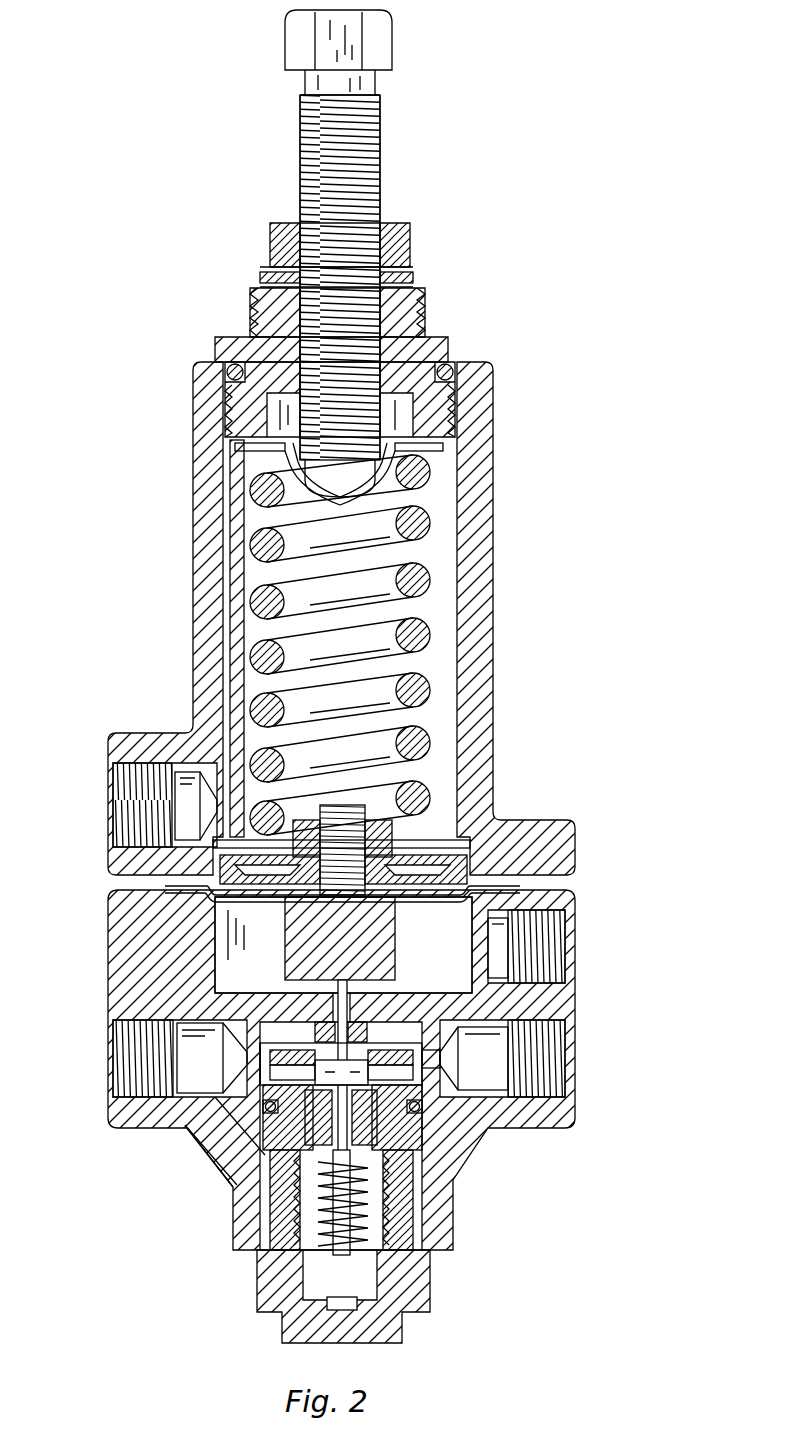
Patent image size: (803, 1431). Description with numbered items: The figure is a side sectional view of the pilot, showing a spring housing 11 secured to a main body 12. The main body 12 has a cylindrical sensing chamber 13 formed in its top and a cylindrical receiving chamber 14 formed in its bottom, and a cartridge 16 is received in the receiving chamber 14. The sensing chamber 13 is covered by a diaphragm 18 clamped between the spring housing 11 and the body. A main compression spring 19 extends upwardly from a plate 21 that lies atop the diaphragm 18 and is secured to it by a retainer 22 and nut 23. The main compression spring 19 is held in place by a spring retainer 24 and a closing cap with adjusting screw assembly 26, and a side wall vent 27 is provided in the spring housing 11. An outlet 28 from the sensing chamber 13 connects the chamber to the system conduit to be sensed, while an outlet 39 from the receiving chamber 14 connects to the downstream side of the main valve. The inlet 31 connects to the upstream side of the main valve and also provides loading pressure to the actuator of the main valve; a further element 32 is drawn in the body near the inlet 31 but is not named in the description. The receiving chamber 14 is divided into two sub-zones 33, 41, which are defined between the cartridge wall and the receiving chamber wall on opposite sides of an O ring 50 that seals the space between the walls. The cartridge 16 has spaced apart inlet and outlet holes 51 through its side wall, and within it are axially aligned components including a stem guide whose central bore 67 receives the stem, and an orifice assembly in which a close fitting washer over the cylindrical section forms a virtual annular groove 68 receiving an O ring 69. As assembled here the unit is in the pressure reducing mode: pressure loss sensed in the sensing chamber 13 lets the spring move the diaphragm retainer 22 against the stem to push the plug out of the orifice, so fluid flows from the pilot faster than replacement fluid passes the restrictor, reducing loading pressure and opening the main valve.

The spring housing 11 is at (492, 492).
The main body 12 is at (108, 945).
The sensing chamber 13 is at (448, 958).
The receiving chamber 14 is at (360, 1125).
The cartridge 16 is at (232, 1288).
The diaphragm 18 is at (533, 820).
The main compression spring 19 is at (430, 635).
The plate 21 is at (507, 820).
The retainer 22 is at (477, 903).
The nut 23 is at (300, 845).
The spring retainer 24 is at (238, 452).
The closing cap with adjusting screw assembly 26 is at (207, 331).
The side wall vent 27 is at (110, 790).
The outlet 28 is at (555, 935).
The inlet 31 is at (108, 1050).
The passage 32 is at (187, 1138).
The sub-zone 33 is at (240, 1200).
The outlet 39 is at (555, 1065).
The sub-zone 41 is at (270, 1050).
The O ring 50 is at (420, 1130).
The inlet and outlet holes 51 is at (425, 1105).
The central bore 67 is at (395, 1215).
The virtual annular groove 68 is at (222, 1170).
The O ring 69 is at (420, 1140).